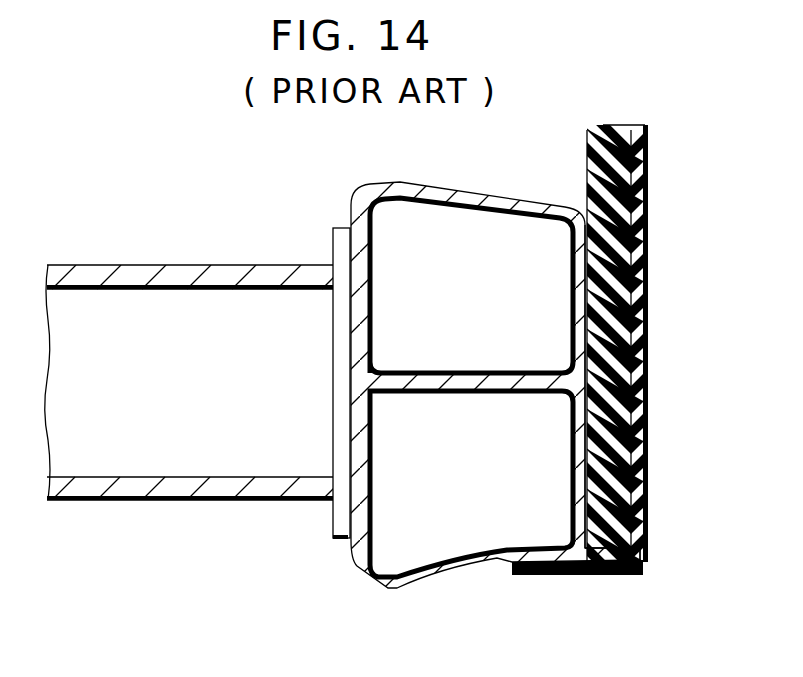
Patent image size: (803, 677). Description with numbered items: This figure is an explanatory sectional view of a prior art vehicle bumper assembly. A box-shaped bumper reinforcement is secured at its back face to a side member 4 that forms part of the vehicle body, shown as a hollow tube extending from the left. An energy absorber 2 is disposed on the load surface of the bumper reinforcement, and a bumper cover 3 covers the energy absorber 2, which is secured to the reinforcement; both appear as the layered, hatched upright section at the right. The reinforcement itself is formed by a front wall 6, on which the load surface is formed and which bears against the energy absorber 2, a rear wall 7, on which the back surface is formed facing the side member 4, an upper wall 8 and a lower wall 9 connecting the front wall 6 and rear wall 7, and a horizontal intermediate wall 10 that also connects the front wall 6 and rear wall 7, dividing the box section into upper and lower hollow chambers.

The energy absorber 2 is at (617, 220).
The bumper cover 3 is at (635, 343).
The side member 4 is at (160, 268).
The front wall 6 is at (583, 447).
The rear wall 7 is at (360, 495).
The upper wall 8 is at (477, 215).
The lower wall 9 is at (497, 567).
The horizontal intermediate wall 10 is at (483, 383).